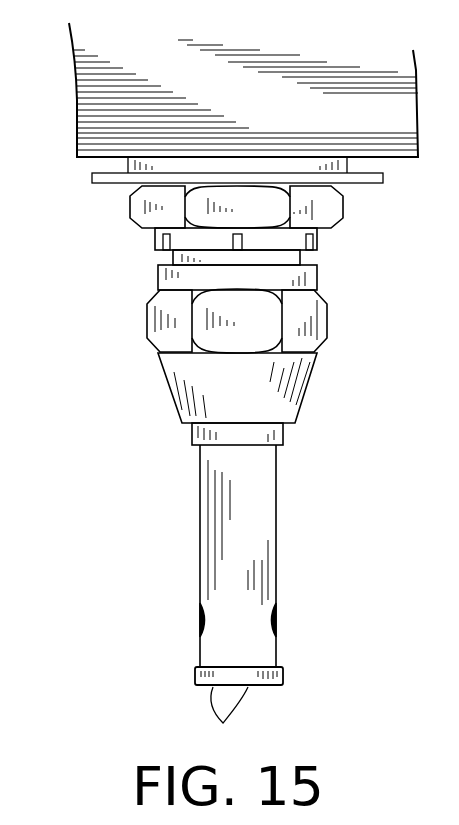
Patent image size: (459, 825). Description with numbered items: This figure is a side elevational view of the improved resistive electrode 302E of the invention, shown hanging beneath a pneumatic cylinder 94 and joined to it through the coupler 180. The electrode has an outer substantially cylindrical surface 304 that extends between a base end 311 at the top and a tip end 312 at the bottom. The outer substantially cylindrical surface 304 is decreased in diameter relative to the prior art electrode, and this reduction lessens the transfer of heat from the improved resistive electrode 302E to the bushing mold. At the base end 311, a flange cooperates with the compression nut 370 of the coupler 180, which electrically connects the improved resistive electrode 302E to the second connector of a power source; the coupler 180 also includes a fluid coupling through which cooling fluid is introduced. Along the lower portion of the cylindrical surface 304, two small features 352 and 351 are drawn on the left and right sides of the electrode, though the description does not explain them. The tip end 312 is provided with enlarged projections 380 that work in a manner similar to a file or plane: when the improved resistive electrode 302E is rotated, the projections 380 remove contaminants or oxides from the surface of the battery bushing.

The pneumatic cylinder 94 is at (77, 118).
The coupler 180 is at (350, 243).
The compression nut 370 is at (310, 320).
The base end 311 is at (287, 390).
The improved resistive electrode 302E is at (277, 473).
The outer substantially cylindrical surface 304 is at (276, 533).
The left bulge 352 is at (203, 617).
The right bulge 351 is at (277, 620).
The tip end 312 is at (258, 687).
The enlarged projections 380 is at (223, 721).